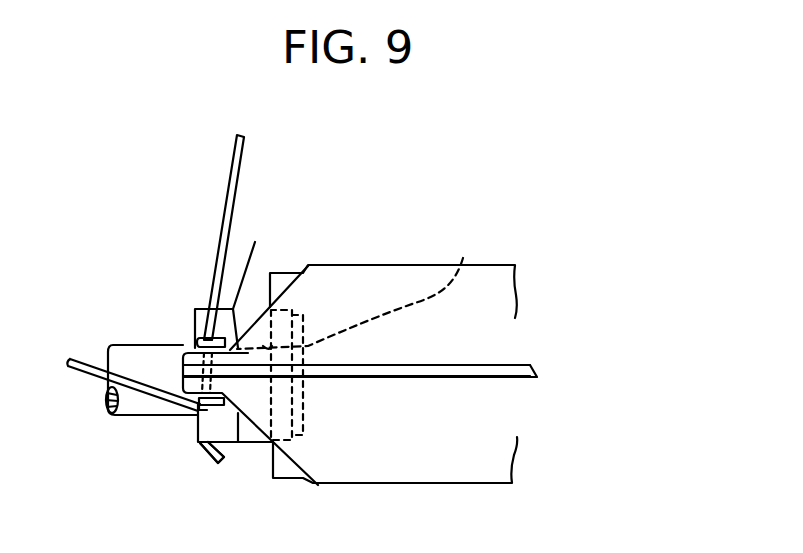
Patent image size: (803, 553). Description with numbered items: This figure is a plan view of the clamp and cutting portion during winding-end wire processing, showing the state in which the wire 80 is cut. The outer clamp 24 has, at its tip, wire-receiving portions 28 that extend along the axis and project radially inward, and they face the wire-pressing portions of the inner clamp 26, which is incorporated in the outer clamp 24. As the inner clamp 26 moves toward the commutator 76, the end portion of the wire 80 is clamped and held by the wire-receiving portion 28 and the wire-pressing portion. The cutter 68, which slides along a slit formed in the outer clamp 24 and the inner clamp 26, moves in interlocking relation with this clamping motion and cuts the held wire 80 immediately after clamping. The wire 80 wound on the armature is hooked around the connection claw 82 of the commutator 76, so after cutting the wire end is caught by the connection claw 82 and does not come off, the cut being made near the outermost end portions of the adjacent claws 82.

The outer clamp 24 is at (405, 277).
The inner clamp 26 is at (462, 263).
The wire-receiving portion 28 is at (183, 362).
The cutter 68 is at (508, 368).
The commutator 76 is at (250, 445).
The wire 80 is at (233, 167).
The connection claw 82 is at (210, 297).